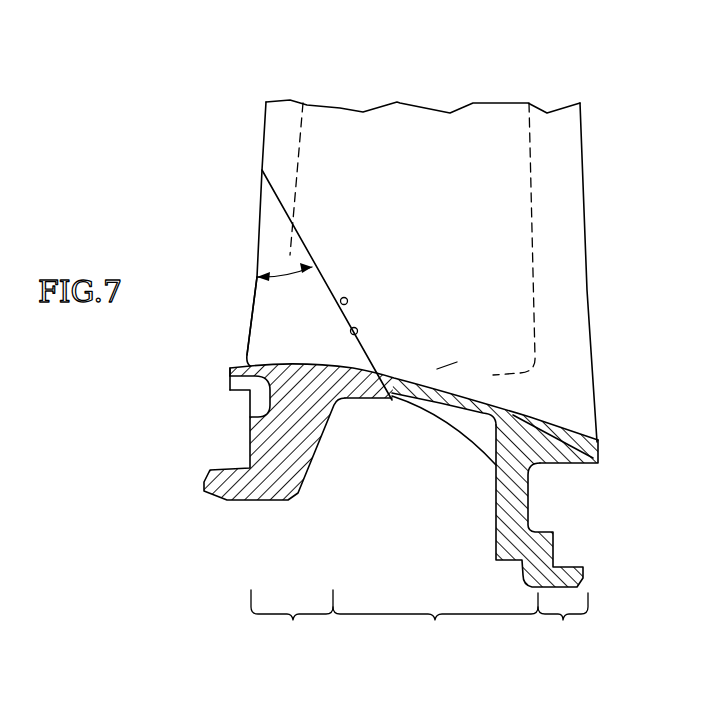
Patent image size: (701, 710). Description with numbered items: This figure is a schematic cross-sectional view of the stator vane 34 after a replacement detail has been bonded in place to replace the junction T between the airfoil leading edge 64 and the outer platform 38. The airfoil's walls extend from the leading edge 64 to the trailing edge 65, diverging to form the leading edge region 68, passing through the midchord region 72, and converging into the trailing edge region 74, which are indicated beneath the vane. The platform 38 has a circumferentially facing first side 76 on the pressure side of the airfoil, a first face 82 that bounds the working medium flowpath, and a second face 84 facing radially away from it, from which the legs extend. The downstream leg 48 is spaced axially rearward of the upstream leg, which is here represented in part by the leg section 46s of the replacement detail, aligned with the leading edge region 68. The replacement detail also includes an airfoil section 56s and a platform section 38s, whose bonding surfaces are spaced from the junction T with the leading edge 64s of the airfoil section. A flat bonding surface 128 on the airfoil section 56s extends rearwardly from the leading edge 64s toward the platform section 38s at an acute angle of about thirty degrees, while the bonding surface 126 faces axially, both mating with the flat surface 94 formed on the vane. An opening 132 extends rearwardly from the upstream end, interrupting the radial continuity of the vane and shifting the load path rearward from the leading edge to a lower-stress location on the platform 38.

The stator vane 34 is at (313, 128).
The leading edge 64 is at (263, 135).
The leading edge of the airfoil section 64s is at (260, 203).
The trailing edge 65 is at (585, 257).
The airfoil section 56s is at (255, 313).
The junction T is at (248, 358).
The platform section 38s is at (230, 373).
The opening 132 is at (262, 397).
The leg section 46s is at (292, 448).
The bonding surface 126 is at (403, 402).
The outer platform 38 is at (533, 413).
The first side 76 is at (600, 442).
The downstream leg 48 is at (513, 523).
The first face 82 is at (479, 420).
The second face 84 is at (448, 413).
The bonding surface 128 is at (341, 303).
The flat surface 94 is at (358, 331).
The leading edge region 68 is at (292, 621).
The midchord region 72 is at (435, 622).
The trailing edge region 74 is at (563, 622).